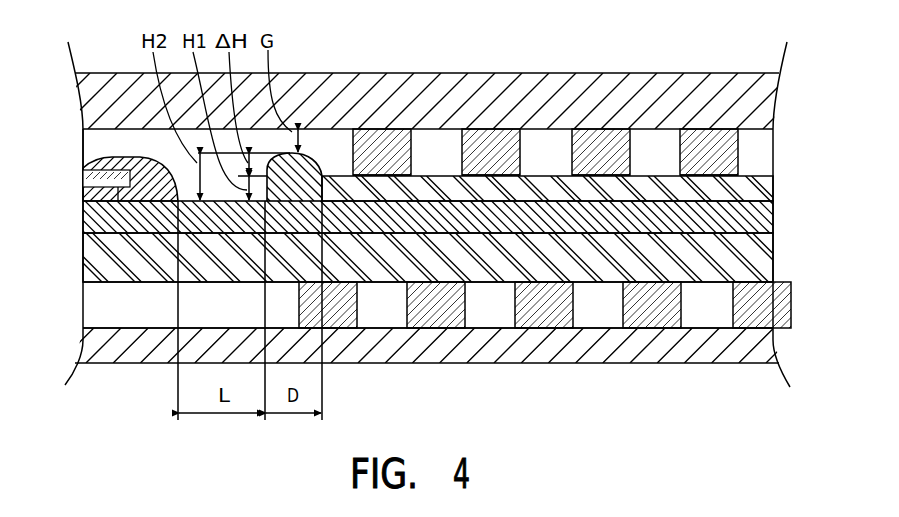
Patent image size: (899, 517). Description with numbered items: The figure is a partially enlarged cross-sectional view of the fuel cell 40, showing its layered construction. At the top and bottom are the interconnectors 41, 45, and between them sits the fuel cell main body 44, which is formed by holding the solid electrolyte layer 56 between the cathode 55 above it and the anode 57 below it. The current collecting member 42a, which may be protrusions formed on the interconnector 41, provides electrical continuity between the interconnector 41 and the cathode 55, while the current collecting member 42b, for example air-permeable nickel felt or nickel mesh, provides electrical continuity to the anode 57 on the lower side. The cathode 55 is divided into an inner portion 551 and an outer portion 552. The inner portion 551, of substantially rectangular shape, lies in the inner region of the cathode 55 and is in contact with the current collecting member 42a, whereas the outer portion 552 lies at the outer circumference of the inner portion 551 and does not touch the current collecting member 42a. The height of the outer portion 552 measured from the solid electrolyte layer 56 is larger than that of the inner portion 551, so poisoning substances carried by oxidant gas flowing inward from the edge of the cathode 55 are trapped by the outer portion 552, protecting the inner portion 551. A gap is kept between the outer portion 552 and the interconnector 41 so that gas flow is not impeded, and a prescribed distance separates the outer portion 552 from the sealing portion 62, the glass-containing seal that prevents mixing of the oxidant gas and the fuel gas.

The fuel cell 40 is at (118, 13).
The interconnector 41 is at (494, 107).
The current collecting member 42a is at (402, 161).
The current collecting member 42b is at (453, 314).
The fuel cell main body 44 is at (417, 239).
The interconnector 45 is at (494, 359).
The cathode 55 is at (515, 216).
The inner portion 551 is at (437, 176).
The outer portion 552 is at (315, 152).
The solid electrolyte layer 56 is at (537, 203).
The anode 57 is at (520, 243).
The sealing portion 62 is at (100, 156).